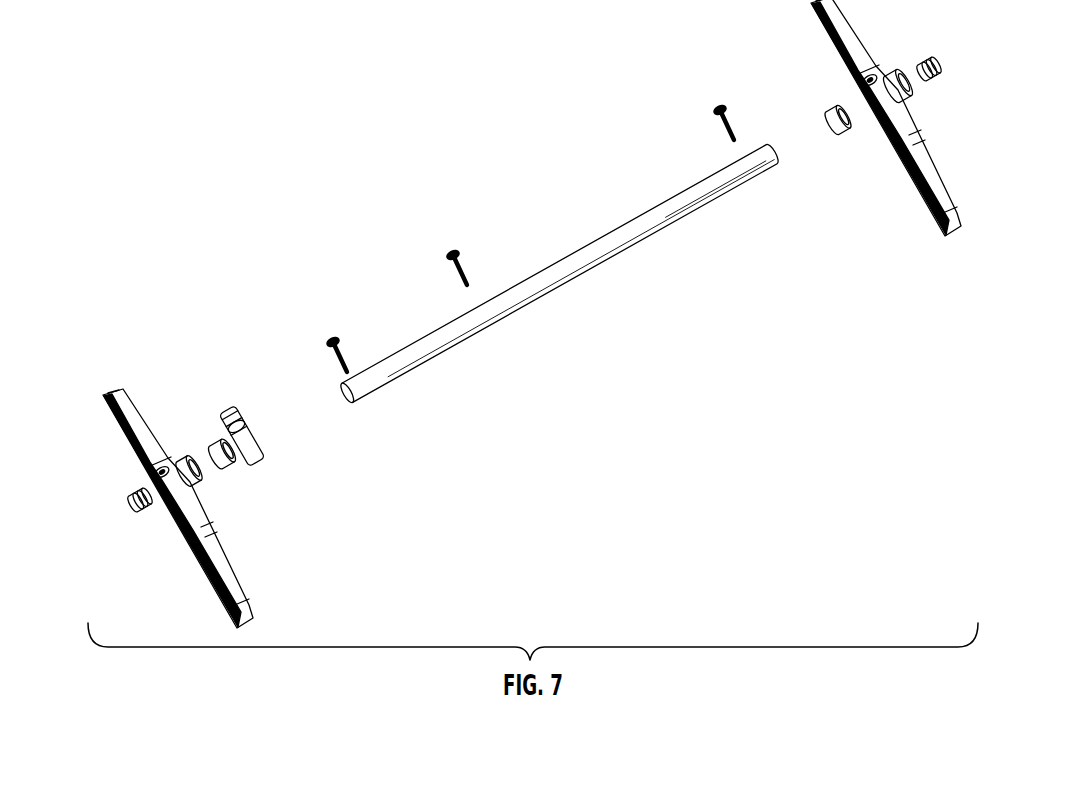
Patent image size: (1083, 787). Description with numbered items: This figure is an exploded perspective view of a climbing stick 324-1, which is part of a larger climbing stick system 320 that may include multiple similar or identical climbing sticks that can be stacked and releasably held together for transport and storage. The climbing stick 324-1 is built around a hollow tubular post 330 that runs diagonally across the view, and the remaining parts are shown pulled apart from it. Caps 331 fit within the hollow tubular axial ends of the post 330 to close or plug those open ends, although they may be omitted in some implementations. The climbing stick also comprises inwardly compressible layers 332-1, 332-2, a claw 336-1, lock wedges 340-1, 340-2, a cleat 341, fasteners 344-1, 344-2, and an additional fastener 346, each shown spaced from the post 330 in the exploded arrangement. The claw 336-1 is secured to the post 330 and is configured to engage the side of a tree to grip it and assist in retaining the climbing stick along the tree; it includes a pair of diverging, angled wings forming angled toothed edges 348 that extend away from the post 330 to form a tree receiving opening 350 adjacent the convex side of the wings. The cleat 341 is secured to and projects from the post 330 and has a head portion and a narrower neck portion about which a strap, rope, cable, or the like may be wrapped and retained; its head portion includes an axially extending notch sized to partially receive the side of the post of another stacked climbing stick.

The climbing stick system 320 is at (186, 180).
The climbing stick 324-1 is at (343, 238).
The post 330 is at (610, 252).
The caps 331 is at (933, 56).
The inwardly compressible layer 332-1 is at (233, 468).
The inwardly compressible layer 332-2 is at (907, 88).
The claw 336-1 is at (110, 390).
The lock wedge 340-1 is at (183, 462).
The lock wedge 340-2 is at (850, 137).
The cleat 341 is at (262, 460).
The fastener 344-1 is at (334, 334).
The fastener 344-2 is at (722, 101).
The fastener 346 is at (453, 250).
The angled toothed edges 348 is at (384, 0).
The tree receiving opening 350 is at (241, 12).